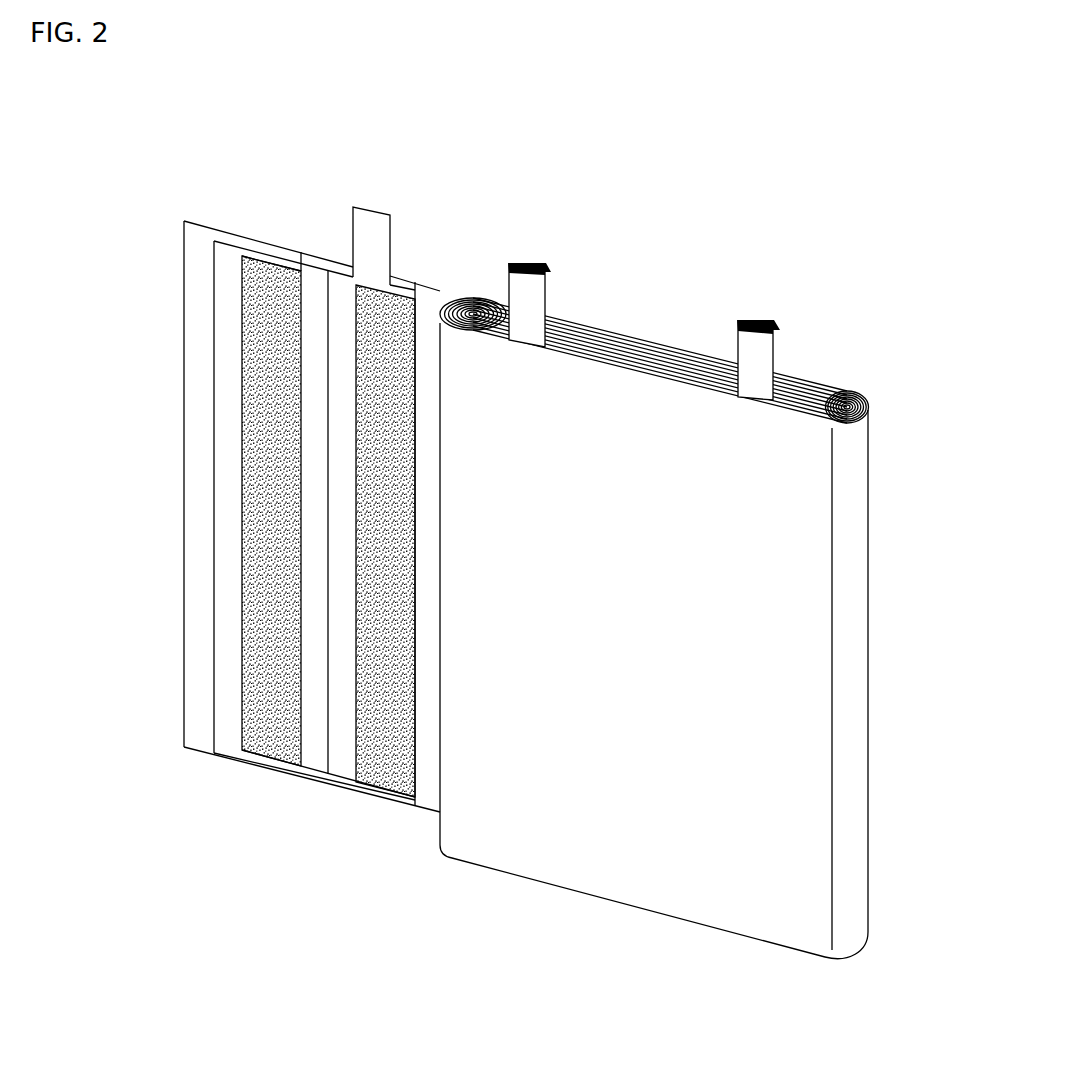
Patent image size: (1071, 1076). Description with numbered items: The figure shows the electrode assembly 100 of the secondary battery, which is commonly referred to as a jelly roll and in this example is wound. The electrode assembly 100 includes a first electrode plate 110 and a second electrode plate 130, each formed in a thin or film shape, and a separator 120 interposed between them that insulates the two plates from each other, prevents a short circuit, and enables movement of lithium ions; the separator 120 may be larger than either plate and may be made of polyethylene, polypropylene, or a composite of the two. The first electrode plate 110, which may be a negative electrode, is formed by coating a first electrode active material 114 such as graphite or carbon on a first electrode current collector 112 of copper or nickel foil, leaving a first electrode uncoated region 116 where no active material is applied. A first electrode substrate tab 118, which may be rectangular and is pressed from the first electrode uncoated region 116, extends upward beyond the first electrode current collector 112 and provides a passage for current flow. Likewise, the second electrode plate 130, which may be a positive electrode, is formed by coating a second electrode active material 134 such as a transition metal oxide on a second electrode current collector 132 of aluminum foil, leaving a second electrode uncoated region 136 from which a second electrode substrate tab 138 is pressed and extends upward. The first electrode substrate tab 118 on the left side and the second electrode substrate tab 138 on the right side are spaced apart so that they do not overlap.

The electrode assembly 100 is at (947, 190).
The first electrode plate 110 is at (337, 804).
The first electrode current collector 112 is at (336, 763).
The first electrode active material 114 is at (398, 780).
The first electrode uncoated region 116 is at (401, 291).
The first electrode substrate tab 118 is at (369, 218).
The separator 120 is at (312, 720).
The second electrode plate 130 is at (222, 222).
The second electrode current collector 132 is at (230, 440).
The second electrode active material 134 is at (272, 278).
The second electrode uncoated region 136 is at (258, 250).
The second electrode substrate tab 138 is at (757, 338).